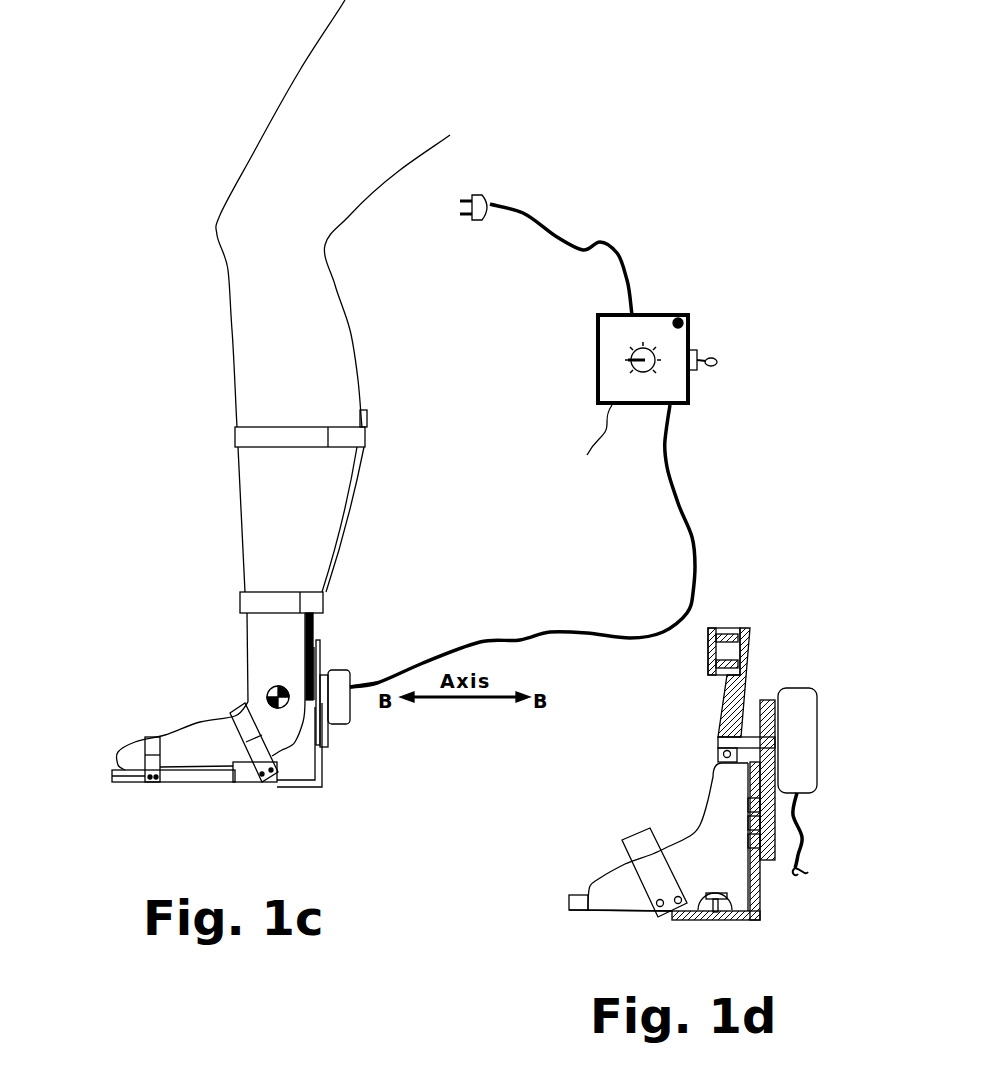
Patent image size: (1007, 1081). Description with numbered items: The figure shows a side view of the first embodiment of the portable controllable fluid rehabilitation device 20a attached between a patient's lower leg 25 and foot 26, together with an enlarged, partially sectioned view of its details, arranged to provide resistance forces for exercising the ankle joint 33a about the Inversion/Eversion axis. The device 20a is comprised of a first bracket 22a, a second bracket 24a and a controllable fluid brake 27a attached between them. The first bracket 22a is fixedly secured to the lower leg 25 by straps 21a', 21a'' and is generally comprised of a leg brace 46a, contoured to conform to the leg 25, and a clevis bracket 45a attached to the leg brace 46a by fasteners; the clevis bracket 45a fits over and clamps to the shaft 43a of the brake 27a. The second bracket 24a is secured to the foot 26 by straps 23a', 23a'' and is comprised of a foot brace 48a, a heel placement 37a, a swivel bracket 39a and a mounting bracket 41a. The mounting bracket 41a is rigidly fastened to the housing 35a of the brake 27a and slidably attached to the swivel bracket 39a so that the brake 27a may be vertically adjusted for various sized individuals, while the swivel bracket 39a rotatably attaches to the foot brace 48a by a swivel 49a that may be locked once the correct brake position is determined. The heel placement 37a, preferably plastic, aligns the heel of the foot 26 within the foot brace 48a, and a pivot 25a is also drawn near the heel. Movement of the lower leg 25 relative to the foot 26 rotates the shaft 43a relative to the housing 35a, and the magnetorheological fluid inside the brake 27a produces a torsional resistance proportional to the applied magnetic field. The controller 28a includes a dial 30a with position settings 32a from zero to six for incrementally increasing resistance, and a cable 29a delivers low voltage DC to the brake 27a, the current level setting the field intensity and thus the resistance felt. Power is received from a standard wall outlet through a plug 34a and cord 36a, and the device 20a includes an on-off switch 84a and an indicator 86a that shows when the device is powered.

In FIG. 1C, the portable rehabilitation device 20a is at (222, 657).
In FIG. 1C, the strap 21a' is at (259, 451).
In FIG. 1C, the strap 21a'' is at (335, 592).
In FIG. 1C, the first bracket 22a is at (373, 492).
In FIG. 1D, the first bracket 22a is at (764, 613).
In FIG. 1C, the strap 23a' is at (206, 723).
In FIG. 1D, the strap 23a' is at (622, 842).
In FIG. 1C, the strap 23a'' is at (111, 728).
In FIG. 1C, the second bracket 24a is at (177, 794).
In FIG. 1D, the second bracket 24a is at (559, 927).
In FIG. 1C, the lower leg 25 is at (301, 386).
In FIG. 1C, the hinge joint 25a is at (307, 772).
In FIG. 1C, the foot 26 is at (218, 753).
In FIG. 1C, the controllable fluid brake 27a is at (366, 715).
In FIG. 1D, the controllable fluid brake 27a is at (830, 750).
In FIG. 1C, the controller 28a is at (584, 380).
In FIG. 1C, the cable 29a is at (560, 630).
In FIG. 1D, the cable 29a is at (800, 822).
In FIG. 1C, the dial 30a is at (633, 353).
In FIG. 1C, the position settings 32a is at (610, 327).
In FIG. 1C, the body joint 33a is at (283, 696).
In FIG. 1C, the plug 34a is at (485, 197).
In FIG. 1C, the housing 35a is at (343, 670).
In FIG. 1D, the housing 35a is at (818, 715).
In FIG. 1C, the cord 36a is at (543, 223).
In FIG. 1C, the heel placement 37a is at (247, 775).
In FIG. 1D, the heel placement 37a is at (729, 873).
In FIG. 1C, the swivel bracket 39a is at (293, 787).
In FIG. 1D, the swivel bracket 39a is at (757, 892).
In FIG. 1C, the mounting bracket 41a is at (330, 732).
In FIG. 1D, the mounting bracket 41a is at (770, 700).
In FIG. 1C, the shaft 43a is at (320, 670).
In FIG. 1D, the shaft 43a is at (718, 742).
In FIG. 1C, the clevis bracket 45a is at (315, 642).
In FIG. 1D, the clevis bracket 45a is at (752, 645).
In FIG. 1C, the leg brace 46a is at (343, 527).
In FIG. 1D, the leg brace 46a is at (705, 650).
In FIG. 1C, the foot brace 48a is at (123, 777).
In FIG. 1D, the foot brace 48a is at (573, 897).
In FIG. 1D, the swivel 49a is at (707, 915).
In FIG. 1C, the on-off switch 84a is at (720, 357).
In FIG. 1C, the indicator 86a is at (692, 315).